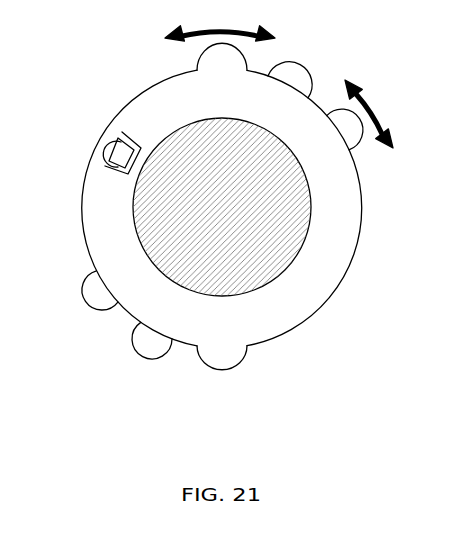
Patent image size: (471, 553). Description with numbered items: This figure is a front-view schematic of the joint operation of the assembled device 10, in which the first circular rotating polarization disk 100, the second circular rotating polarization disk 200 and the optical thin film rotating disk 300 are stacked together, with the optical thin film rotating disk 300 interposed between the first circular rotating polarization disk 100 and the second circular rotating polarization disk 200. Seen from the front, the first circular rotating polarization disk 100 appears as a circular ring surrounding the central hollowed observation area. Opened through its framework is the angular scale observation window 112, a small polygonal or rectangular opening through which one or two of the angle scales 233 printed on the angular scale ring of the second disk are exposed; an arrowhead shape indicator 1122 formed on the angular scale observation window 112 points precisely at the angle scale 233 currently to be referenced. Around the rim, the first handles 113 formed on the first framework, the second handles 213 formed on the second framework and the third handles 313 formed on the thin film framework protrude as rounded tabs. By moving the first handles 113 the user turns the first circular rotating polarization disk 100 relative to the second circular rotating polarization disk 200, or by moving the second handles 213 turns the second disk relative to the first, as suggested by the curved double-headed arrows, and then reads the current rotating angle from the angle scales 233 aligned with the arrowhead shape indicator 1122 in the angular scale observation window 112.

The wearable device 10 is at (417, 264).
The first circular rotating polarization disk 100 is at (310, 307).
The angular scale observation window 112 is at (110, 162).
The arrowhead shape indicator 1122 is at (118, 154).
The first handles 113 is at (222, 358).
The second circular rotating polarization disk 200 is at (68, 306).
The second handles 213 is at (102, 290).
The angle scales 233 is at (118, 173).
The optical thin film rotating disk 300 is at (117, 361).
The third handles 313 is at (150, 345).